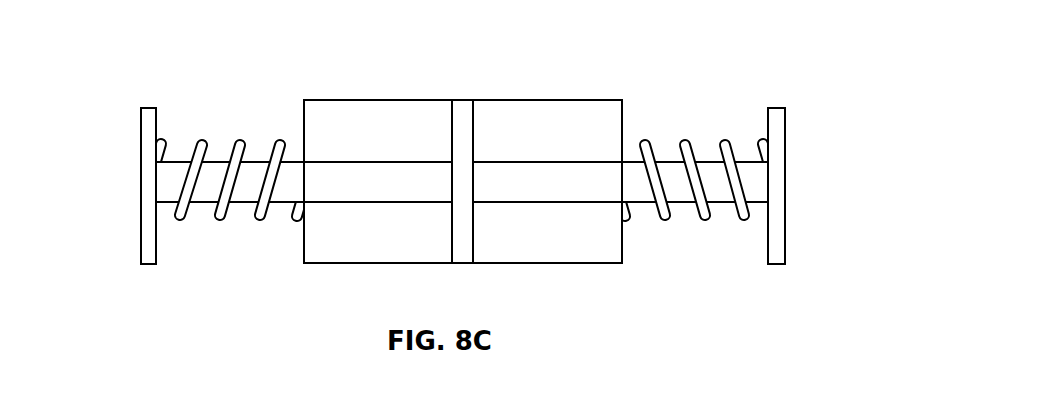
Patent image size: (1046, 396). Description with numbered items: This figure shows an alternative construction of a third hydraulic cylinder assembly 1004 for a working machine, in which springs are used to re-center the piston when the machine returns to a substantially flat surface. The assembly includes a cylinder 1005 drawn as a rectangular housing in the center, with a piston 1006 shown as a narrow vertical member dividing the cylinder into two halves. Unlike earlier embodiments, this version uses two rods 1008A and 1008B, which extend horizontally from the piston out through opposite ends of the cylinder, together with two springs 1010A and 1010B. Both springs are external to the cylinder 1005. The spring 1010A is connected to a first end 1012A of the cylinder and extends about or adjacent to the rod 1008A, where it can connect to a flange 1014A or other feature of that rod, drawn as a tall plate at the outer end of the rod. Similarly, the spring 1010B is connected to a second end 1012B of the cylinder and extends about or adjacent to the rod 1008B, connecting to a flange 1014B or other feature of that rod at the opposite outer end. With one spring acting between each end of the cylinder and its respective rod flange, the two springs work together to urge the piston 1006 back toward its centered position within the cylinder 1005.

The third hydraulic cylinder assembly 1004 is at (181, 33).
The cylinder 1005 is at (572, 100).
The piston 1006 is at (462, 253).
The rod 1008A is at (561, 180).
The rod 1008B is at (401, 180).
The spring 1010A is at (686, 138).
The spring 1010B is at (239, 138).
The first end 1012A is at (622, 243).
The second end 1012B is at (304, 250).
The flange 1014A is at (785, 190).
The flange 1014B is at (141, 185).